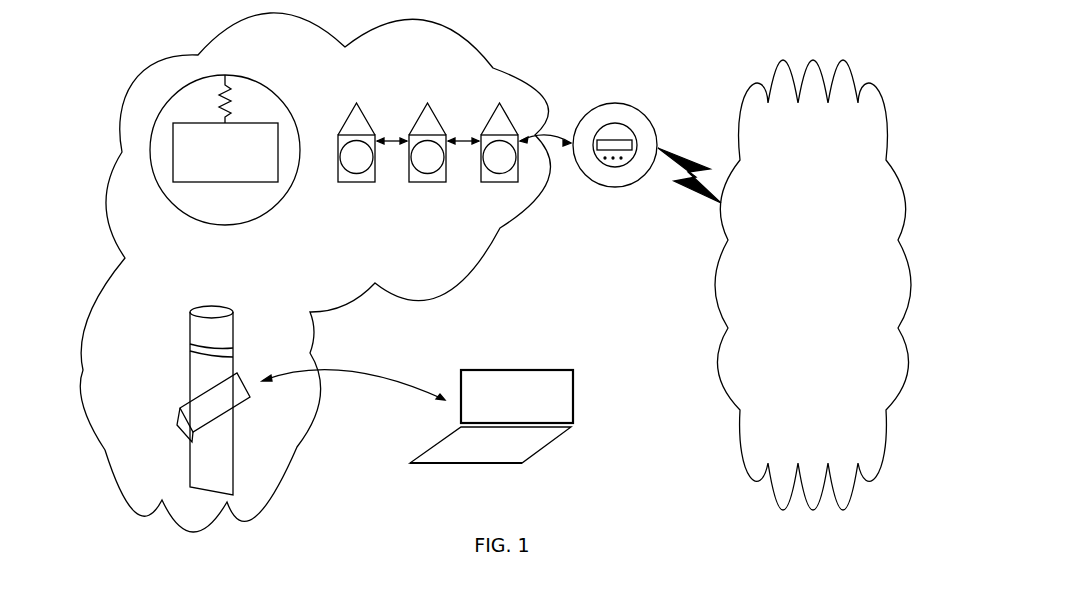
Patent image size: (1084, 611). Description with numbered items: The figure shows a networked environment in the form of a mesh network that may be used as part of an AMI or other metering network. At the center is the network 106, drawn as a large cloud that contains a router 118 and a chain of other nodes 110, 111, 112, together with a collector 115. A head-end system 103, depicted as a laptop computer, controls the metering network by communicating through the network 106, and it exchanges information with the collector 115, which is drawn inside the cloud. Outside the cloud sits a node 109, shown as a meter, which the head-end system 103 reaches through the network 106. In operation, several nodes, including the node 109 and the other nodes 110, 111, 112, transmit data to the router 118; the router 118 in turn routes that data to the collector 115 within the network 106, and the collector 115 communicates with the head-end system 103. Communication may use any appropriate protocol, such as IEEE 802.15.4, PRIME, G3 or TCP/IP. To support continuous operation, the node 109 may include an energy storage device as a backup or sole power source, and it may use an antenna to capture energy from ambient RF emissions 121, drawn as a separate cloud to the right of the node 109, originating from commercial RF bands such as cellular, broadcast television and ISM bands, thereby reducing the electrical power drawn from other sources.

The network 106 is at (453, 39).
The router 118 is at (268, 130).
The node 110 is at (338, 182).
The node 111 is at (409, 182).
The node 112 is at (481, 182).
The node 109 is at (626, 113).
The ambient RF emissions 121 is at (813, 285).
The collector 115 is at (237, 408).
The head-end system 103 is at (563, 400).